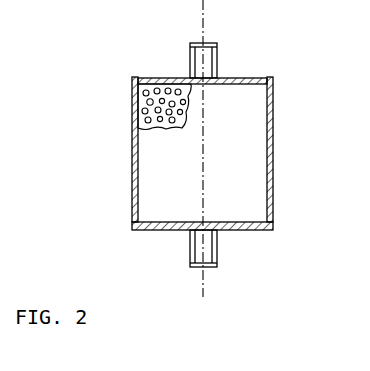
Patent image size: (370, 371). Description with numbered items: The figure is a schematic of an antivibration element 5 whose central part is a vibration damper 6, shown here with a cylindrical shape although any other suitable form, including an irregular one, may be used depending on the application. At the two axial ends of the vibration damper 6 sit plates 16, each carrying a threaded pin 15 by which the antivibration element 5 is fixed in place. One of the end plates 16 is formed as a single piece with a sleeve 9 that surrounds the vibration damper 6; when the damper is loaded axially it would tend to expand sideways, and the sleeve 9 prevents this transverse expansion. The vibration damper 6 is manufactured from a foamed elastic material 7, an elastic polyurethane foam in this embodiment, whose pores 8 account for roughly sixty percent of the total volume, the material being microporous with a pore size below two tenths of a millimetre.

The antivibration element 5 is at (249, 63).
The vibration damper 6 is at (244, 152).
The foamed elastic material 7 is at (140, 101).
The pores 8 is at (141, 124).
The sleeve 9 is at (270, 181).
The threaded pin 15 is at (196, 52).
The plate 16 is at (253, 80).